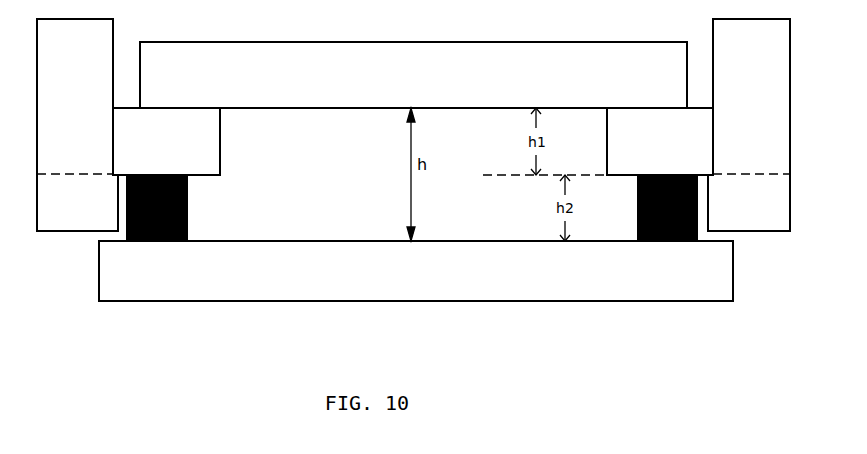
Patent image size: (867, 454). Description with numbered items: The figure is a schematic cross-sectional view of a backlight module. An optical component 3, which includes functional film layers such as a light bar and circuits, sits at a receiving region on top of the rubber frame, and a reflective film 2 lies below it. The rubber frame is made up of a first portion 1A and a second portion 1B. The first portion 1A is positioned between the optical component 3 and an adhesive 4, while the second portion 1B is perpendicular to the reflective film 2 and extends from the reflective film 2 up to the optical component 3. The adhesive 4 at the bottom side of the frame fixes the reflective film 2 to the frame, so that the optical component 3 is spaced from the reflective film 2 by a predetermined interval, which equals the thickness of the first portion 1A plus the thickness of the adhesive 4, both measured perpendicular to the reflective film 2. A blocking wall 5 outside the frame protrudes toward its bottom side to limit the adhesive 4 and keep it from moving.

The first portion 1A is at (413, 141).
The second portion 1B is at (413, 97).
The reflective film 2 is at (416, 271).
The optical component 3 is at (413, 75).
The adhesive 4 is at (150, 223).
The blocking wall 5 is at (413, 202).